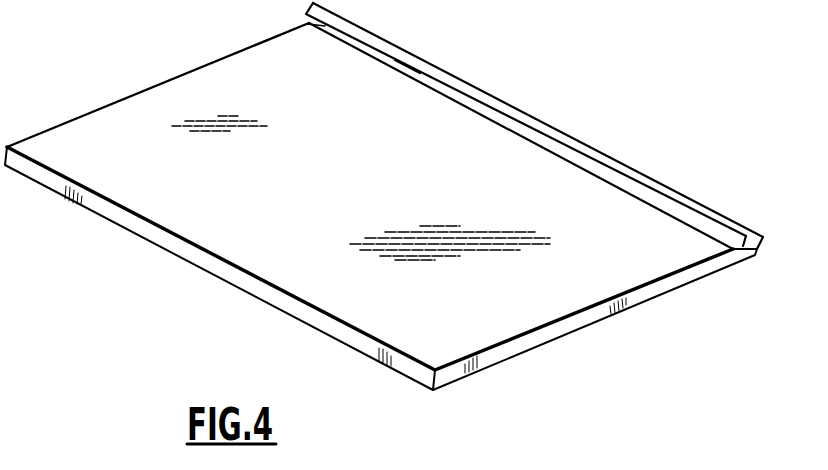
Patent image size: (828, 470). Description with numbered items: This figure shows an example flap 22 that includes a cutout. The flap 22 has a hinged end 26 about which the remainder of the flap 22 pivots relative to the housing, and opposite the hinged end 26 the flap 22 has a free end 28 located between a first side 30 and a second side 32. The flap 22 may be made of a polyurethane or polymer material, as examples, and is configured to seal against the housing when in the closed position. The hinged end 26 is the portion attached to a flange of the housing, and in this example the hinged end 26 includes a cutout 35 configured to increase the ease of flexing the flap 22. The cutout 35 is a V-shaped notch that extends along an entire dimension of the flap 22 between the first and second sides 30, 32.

The flap 22 is at (290, 264).
The hinged end 26 is at (640, 172).
The free end 28 is at (319, 318).
The first side 30 is at (643, 292).
The second side 32 is at (127, 97).
The cutout 35 is at (431, 85).